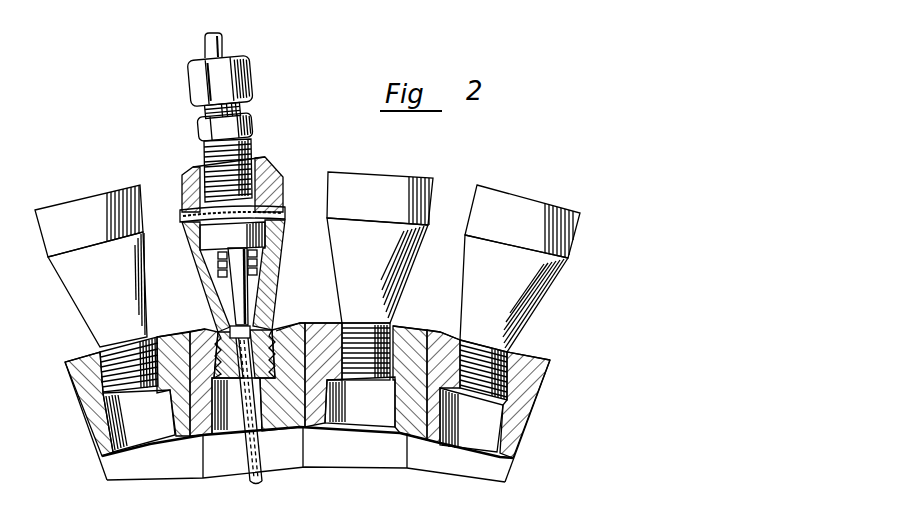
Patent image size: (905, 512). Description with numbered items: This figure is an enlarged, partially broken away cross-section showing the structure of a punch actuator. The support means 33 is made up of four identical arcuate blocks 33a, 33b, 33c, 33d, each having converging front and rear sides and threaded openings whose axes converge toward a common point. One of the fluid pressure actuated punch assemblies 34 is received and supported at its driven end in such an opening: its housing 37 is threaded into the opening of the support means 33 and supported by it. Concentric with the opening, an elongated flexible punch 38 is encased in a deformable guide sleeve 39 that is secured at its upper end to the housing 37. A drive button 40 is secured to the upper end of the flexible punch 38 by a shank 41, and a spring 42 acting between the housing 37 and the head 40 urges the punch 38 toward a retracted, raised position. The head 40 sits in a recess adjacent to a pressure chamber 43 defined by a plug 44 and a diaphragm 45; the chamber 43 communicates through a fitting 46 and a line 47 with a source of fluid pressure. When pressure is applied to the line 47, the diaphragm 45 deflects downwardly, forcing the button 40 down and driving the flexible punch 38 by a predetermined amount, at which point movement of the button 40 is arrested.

The support means 33 is at (281, 318).
The arcuate block 33a is at (77, 380).
The arcuate block 33b is at (201, 326).
The arcuate block 33c is at (322, 324).
The arcuate block 33d is at (533, 360).
The fluid pressure actuated punch assembly 34 is at (237, 260).
The housing 37 is at (65, 277).
The flexible punch 38 is at (257, 483).
The guide sleeve 39 is at (263, 443).
The drive button 40 is at (213, 237).
The shank 41 is at (237, 287).
The spring 42 is at (258, 262).
The pressure chamber 43 is at (200, 168).
The plug 44 is at (203, 163).
The diaphragm 45 is at (190, 217).
The fitting 46 is at (253, 130).
The line 47 is at (224, 44).